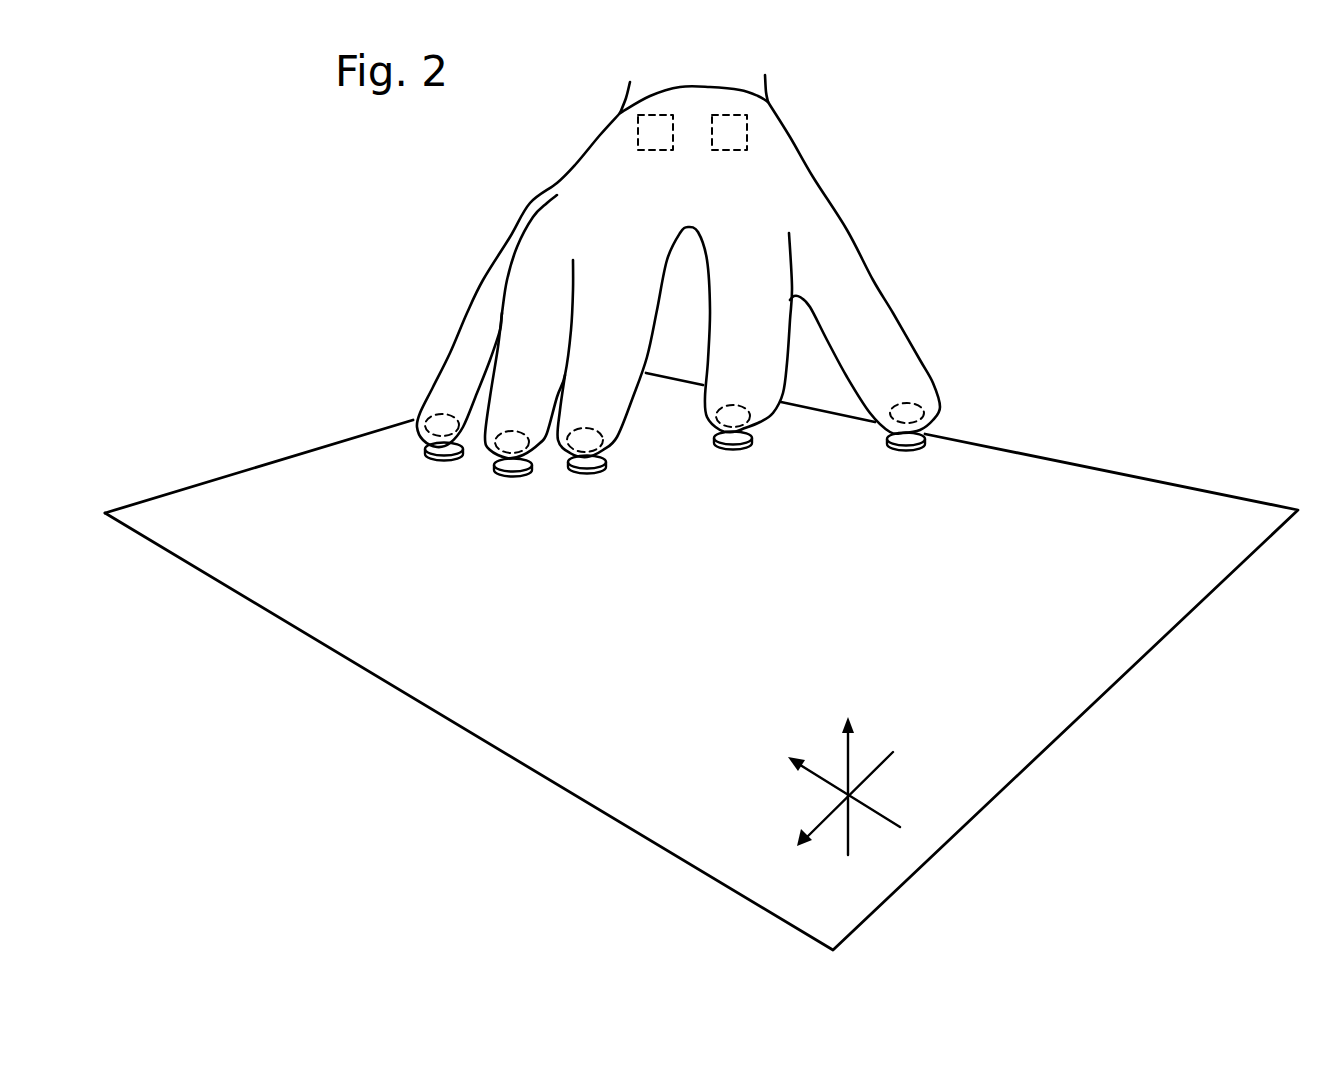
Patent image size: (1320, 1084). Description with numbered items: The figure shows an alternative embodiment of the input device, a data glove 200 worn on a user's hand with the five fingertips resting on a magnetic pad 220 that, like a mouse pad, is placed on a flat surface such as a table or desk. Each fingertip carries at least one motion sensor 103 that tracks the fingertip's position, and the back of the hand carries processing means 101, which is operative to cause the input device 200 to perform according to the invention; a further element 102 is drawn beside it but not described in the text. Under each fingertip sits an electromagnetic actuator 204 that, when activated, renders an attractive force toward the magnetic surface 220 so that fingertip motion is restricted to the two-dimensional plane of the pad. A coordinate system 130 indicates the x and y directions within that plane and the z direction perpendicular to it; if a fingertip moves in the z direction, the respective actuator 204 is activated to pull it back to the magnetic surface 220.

The data glove 200 is at (512, 241).
The processing means 101 is at (740, 133).
The second sensor 102 is at (648, 133).
The motion sensor 103 is at (437, 417).
The electromagnetic actuator 204 is at (440, 462).
The magnetic pad 220 is at (1031, 489).
The coordinate system 130 is at (774, 795).